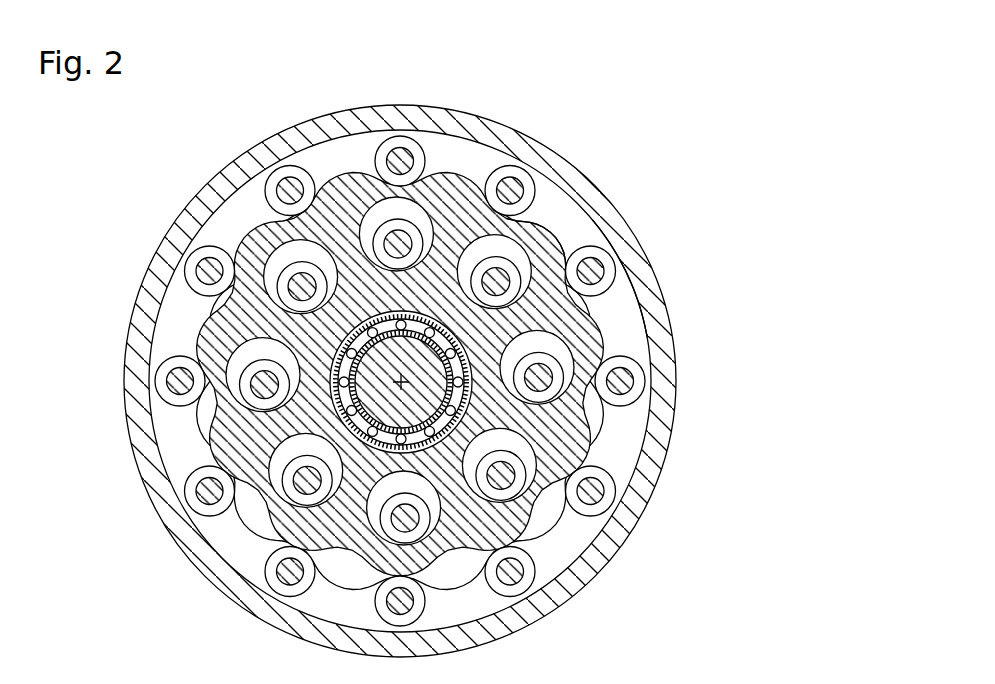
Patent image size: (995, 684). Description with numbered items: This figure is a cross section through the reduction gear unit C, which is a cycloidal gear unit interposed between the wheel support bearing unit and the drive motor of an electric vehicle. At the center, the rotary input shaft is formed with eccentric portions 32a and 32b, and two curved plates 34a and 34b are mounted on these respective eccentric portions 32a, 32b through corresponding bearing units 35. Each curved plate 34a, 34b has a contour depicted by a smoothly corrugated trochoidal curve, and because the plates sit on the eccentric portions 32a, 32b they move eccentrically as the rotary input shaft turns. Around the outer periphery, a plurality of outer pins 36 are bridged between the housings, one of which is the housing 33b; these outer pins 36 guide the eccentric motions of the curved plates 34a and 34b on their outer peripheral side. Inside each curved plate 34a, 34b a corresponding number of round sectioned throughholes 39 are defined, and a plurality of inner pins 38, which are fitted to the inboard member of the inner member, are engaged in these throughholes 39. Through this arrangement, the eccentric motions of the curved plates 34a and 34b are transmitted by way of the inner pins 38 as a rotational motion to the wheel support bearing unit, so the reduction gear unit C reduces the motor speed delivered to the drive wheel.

The eccentric portion 32a is at (272, 452).
The eccentric portion 32b is at (365, 393).
The housing 33b is at (215, 238).
The curved plate 34a is at (636, 277).
The curved plate 34b is at (543, 233).
The bearing unit 35 is at (345, 334).
The outer pin 36 is at (392, 157).
The inner pin 38 is at (494, 278).
The throughhole 39 is at (565, 345).
The reduction gear unit C is at (210, 178).